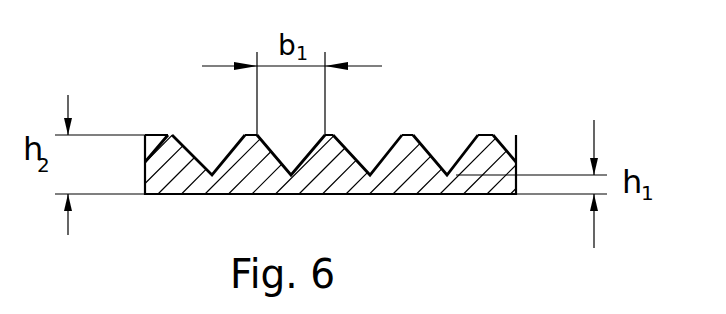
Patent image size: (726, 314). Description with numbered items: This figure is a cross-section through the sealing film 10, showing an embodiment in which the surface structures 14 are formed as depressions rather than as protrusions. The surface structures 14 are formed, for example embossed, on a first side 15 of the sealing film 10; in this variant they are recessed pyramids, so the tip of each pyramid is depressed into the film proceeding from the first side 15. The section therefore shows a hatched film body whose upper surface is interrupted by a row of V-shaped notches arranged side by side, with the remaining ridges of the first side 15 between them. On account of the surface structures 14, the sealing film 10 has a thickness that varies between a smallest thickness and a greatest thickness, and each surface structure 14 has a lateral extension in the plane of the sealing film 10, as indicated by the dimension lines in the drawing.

The sealing film 10 is at (410, 175).
The surface structures 14 is at (441, 156).
The first side 15 is at (167, 135).